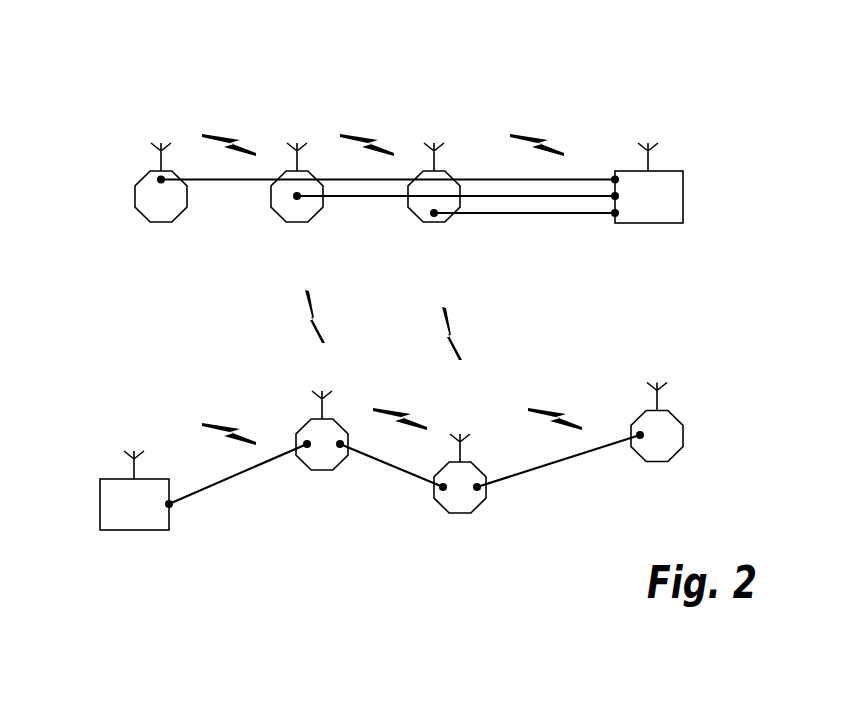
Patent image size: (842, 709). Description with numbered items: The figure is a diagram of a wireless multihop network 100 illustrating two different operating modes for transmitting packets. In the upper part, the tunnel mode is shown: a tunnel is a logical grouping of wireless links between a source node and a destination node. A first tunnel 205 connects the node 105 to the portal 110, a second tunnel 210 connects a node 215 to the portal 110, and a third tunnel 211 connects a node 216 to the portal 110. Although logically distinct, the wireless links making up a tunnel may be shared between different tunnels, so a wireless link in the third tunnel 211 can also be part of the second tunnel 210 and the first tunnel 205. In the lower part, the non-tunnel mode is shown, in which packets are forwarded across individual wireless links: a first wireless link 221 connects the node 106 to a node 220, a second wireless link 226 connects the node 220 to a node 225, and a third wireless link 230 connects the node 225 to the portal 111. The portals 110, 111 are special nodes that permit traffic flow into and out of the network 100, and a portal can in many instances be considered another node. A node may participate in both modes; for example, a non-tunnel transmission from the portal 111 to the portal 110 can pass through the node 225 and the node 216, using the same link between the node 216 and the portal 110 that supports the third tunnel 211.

The wireless multihop network 100 is at (179, 51).
The node 105 is at (135, 203).
The portal 110 is at (683, 186).
The first tunnel 205 is at (236, 181).
The second tunnel 210 is at (373, 198).
The third tunnel 211 is at (543, 216).
The node 215 is at (290, 221).
The node 216 is at (427, 221).
The portal 111 is at (100, 495).
The node 106 is at (683, 440).
The node 225 is at (313, 470).
The node 220 is at (451, 513).
The third wireless link 230 is at (208, 488).
The second wireless link 226 is at (388, 467).
The first wireless link 221 is at (558, 462).